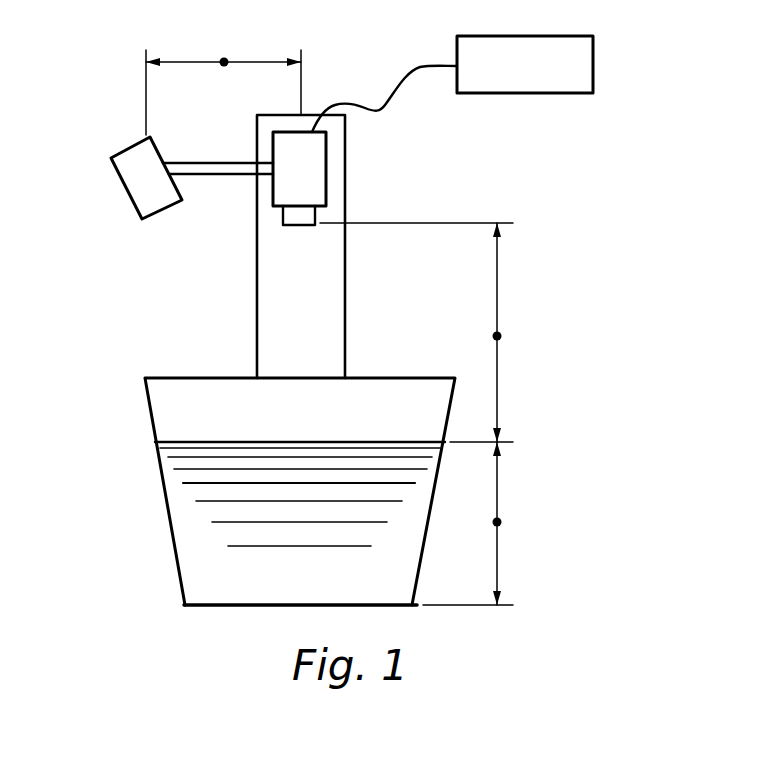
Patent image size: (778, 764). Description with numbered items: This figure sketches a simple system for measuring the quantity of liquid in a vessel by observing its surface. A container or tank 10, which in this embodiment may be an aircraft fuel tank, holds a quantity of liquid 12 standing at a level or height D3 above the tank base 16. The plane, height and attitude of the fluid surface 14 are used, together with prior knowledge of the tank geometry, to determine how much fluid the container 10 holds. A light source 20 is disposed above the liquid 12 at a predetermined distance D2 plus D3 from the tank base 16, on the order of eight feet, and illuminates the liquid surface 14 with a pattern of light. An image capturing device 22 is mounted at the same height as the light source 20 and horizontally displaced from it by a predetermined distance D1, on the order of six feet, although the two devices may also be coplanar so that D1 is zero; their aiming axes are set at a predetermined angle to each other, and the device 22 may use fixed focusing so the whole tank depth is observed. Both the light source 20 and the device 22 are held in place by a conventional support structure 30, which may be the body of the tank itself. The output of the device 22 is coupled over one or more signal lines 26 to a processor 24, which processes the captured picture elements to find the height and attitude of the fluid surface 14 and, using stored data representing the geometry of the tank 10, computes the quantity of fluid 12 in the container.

The container or tank 10 is at (154, 433).
The liquid 12 is at (190, 496).
The fluid surface 14 is at (380, 441).
The tank base 16 is at (226, 607).
The light source 20 is at (120, 188).
The image capturing device 22 is at (326, 172).
The processor 24 is at (593, 64).
The signal lines 26 is at (413, 80).
The support structure 30 is at (268, 270).
The horizontal distance D1 is at (224, 58).
The distance above liquid surface D2 is at (497, 336).
The liquid level or height D3 is at (497, 522).